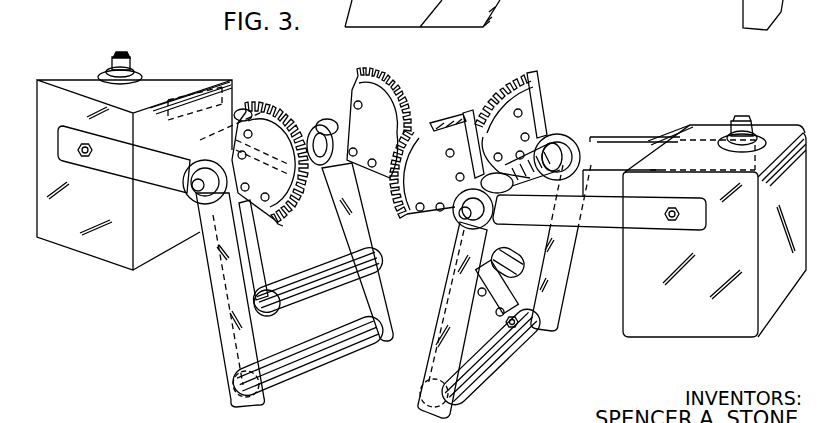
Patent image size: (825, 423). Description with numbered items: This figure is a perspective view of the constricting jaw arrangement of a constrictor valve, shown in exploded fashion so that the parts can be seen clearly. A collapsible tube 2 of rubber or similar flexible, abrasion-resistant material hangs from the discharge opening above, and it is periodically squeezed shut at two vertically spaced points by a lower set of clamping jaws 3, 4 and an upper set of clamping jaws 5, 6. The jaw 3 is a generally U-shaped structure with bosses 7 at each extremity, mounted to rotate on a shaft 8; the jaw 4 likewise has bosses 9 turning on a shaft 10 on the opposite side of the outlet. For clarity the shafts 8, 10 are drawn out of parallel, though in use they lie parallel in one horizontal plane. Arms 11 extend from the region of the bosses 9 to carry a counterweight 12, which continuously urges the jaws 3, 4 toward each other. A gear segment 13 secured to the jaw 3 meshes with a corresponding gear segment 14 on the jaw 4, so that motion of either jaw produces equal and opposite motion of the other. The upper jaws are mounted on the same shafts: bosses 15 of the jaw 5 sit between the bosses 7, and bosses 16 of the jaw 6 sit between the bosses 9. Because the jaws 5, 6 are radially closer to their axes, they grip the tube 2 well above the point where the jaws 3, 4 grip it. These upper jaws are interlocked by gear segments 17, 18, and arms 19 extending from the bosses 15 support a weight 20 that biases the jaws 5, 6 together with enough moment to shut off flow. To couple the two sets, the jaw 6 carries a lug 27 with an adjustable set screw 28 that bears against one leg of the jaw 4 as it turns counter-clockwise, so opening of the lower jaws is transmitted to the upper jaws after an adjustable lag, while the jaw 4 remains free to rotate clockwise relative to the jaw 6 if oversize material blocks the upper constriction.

The collapsible tube 2 is at (503, 10).
The clamping jaw 3 is at (305, 372).
The clamping jaw 4 is at (490, 373).
The clamping jaw 5 is at (312, 300).
The clamping jaw 6 is at (515, 277).
The bosses 7 is at (333, 125).
The shaft 8 is at (315, 124).
The bosses 9 is at (462, 233).
The shaft 10 is at (548, 158).
The arms 11 is at (643, 137).
The counterweight 12 is at (673, 320).
The gear segment 13 is at (262, 100).
The gear segment 14 is at (455, 117).
The bosses 15 is at (328, 120).
The bosses 16 is at (548, 195).
The gear segment 17 is at (420, 93).
The gear segment 18 is at (529, 70).
The arms 19 is at (230, 114).
The weight 20 is at (98, 250).
The lug 27 is at (520, 310).
The set screw 28 is at (520, 326).